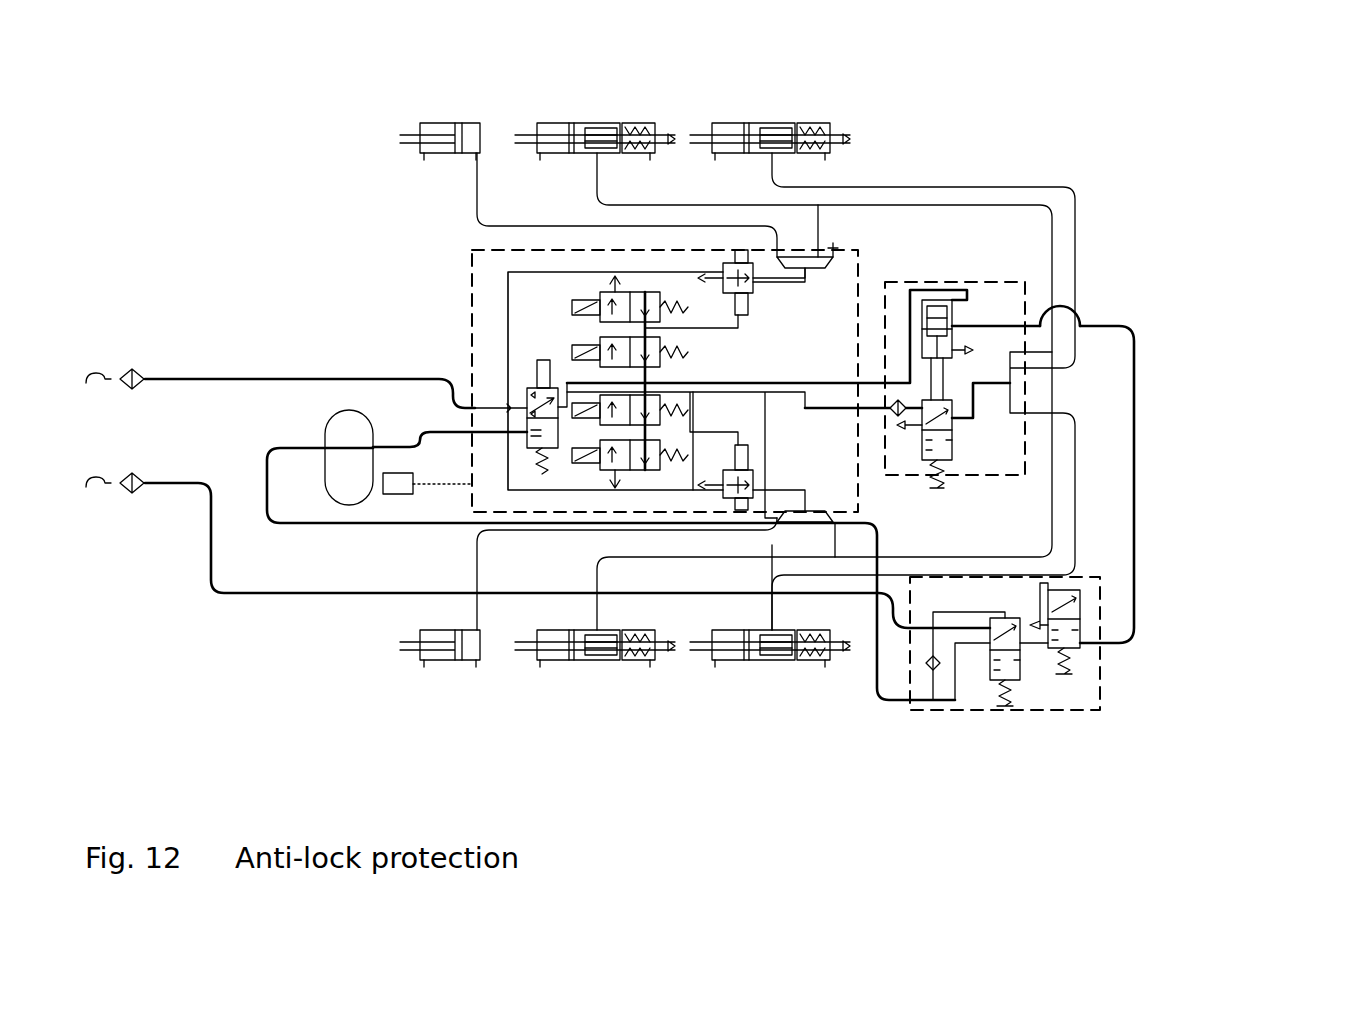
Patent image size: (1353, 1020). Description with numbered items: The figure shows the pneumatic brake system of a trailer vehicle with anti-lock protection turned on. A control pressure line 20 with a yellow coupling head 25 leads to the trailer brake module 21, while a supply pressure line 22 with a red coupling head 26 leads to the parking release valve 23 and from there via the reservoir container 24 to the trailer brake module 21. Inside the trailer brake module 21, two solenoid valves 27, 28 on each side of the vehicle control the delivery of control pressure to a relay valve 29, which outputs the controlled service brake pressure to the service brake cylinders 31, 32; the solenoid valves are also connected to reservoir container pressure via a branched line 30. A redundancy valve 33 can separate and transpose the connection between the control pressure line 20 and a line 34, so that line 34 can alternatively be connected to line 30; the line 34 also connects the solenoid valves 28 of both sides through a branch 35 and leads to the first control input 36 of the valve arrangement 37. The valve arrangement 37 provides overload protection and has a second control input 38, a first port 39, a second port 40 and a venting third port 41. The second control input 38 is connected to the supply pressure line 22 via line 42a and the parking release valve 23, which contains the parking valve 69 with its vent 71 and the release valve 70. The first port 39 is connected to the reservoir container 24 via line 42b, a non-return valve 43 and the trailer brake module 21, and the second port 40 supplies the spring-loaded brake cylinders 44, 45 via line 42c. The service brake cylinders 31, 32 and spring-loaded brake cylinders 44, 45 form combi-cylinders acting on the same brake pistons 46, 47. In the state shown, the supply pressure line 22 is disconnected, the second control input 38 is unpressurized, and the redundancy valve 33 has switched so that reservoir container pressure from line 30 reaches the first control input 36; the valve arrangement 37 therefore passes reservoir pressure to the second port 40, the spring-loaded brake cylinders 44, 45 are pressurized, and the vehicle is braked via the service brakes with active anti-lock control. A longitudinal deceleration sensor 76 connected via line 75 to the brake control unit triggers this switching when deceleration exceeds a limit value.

The control pressure line 20 is at (210, 375).
The trailer brake module 21 is at (475, 250).
The supply pressure line 22 is at (243, 600).
The parking release valve 23 is at (1080, 715).
The reservoir container 24 is at (366, 471).
The yellow coupling head 25 is at (104, 333).
The red coupling head 26 is at (106, 515).
The solenoid valve 27 is at (508, 283).
The solenoid valve 28 is at (600, 349).
The relay valve 29 is at (727, 263).
The line 30 is at (398, 442).
The service brake cylinder 31 is at (595, 126).
The service brake cylinder 32 is at (762, 126).
The redundancy valve 33 is at (527, 390).
The line 34 is at (820, 380).
The branch 35 is at (650, 378).
The first control input 36 is at (958, 284).
The valve arrangement 37 is at (1006, 282).
The second control input 38 is at (963, 323).
The first port 39 is at (880, 375).
The second port 40 is at (1000, 385).
The third port 41 is at (905, 432).
The line 42a is at (1135, 462).
The line 42b is at (772, 545).
The line 42c is at (1060, 306).
The non-return valve 43 is at (900, 412).
The spring-loaded brake cylinder 44 is at (603, 125).
The spring-loaded brake cylinder 45 is at (795, 125).
The brake piston 46 is at (532, 135).
The brake piston 47 is at (722, 125).
The parking valve 69 is at (1080, 620).
The release valve 70 is at (990, 690).
The vent 71 is at (1038, 632).
The line 75 is at (385, 496).
The longitudinal deceleration sensor 76 is at (442, 484).